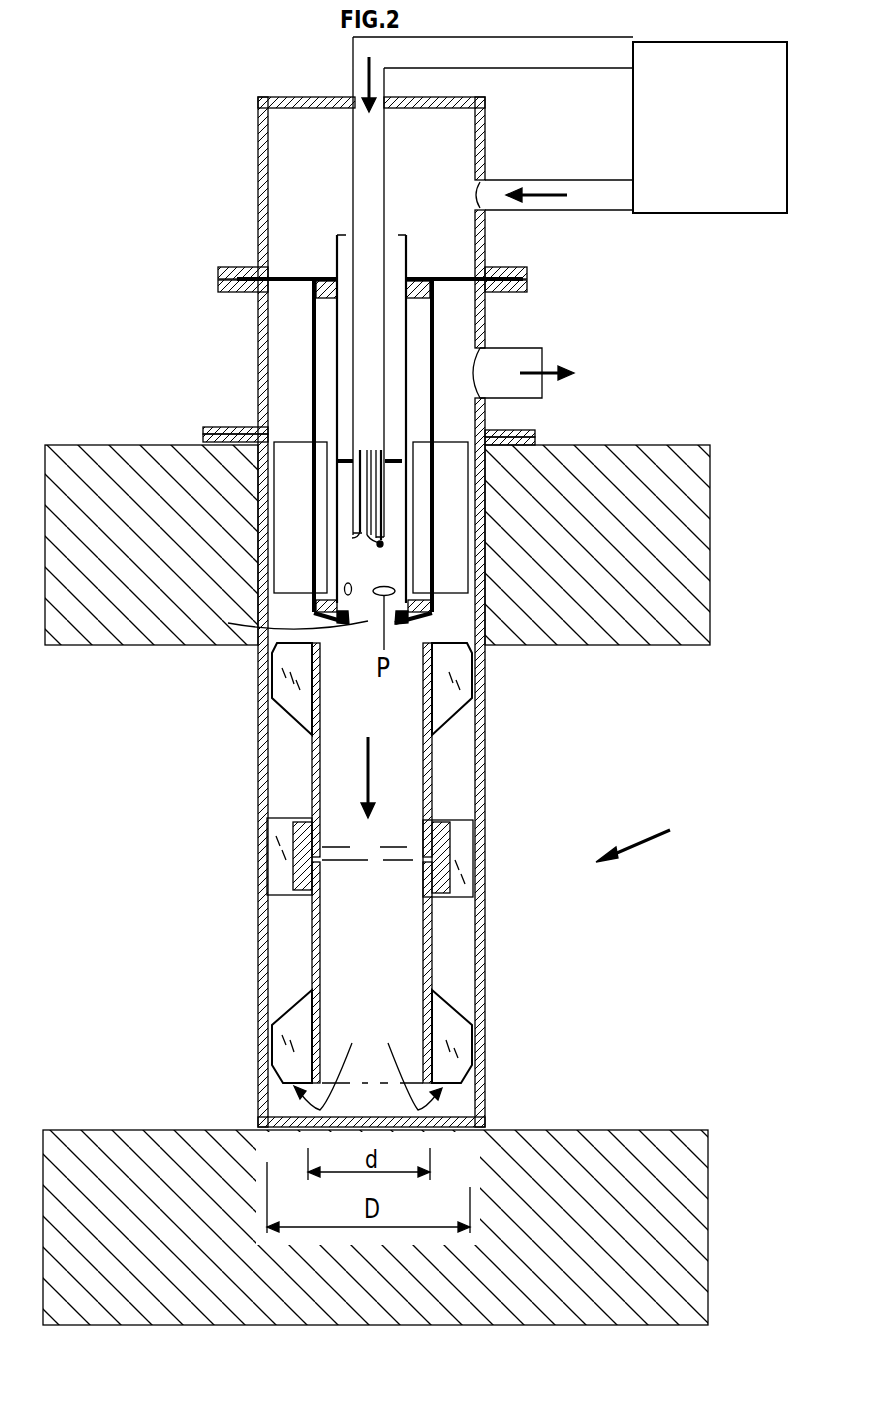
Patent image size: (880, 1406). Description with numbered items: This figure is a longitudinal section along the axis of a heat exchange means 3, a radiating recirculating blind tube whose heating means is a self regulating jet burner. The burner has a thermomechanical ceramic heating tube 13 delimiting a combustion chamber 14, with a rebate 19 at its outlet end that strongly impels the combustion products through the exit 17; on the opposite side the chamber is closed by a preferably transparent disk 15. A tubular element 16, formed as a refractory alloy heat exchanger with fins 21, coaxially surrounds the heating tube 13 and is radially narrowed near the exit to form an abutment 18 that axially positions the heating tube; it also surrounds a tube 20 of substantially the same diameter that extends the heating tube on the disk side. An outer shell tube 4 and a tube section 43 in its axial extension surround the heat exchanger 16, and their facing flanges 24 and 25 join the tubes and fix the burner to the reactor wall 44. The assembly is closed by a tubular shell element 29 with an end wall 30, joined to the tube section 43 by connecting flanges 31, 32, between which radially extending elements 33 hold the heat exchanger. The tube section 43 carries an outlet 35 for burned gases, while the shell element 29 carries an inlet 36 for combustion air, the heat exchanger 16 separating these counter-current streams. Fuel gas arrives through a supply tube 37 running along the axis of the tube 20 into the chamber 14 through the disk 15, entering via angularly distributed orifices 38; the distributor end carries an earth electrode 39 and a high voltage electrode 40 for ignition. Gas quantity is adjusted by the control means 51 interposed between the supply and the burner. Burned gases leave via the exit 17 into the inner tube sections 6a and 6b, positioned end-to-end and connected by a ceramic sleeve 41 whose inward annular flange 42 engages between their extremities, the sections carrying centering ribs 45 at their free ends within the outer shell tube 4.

The heat exchange means 3 is at (641, 839).
The outer shell tube 4 is at (482, 913).
The first inner tube section 6a is at (427, 755).
The second inner tube section 6b is at (418, 944).
The heating tube 13 is at (410, 472).
The combustion chamber 14 is at (360, 556).
The disk 15 is at (342, 416).
The tubular element 16 is at (300, 446).
The exit 17 is at (284, 636).
The abutment 18 is at (432, 611).
The rebate 19 is at (345, 623).
The tube 20 is at (335, 325).
The fins 21 is at (447, 505).
The flange 24 is at (535, 441).
The flange 25 is at (527, 430).
The tubular shell element 29 is at (488, 152).
The wall 30 is at (418, 97).
The connecting flange 31 is at (222, 287).
The connecting flange 32 is at (222, 268).
The radially extending elements 33 is at (295, 278).
The outlet 35 is at (523, 350).
The inlet 36 is at (505, 186).
The supply tube 37 is at (352, 88).
The orifices 38 is at (360, 542).
The earth electrode 39 is at (385, 538).
The high voltage electrode 40 is at (367, 545).
The sleeve 41 is at (437, 850).
The annular flange 42 is at (430, 852).
The tube section 43 is at (485, 312).
The reactor wall 44 is at (637, 620).
The centering ribs 45 is at (452, 696).
The means for controlling the burners and adjusting gas quantity 51 is at (722, 140).